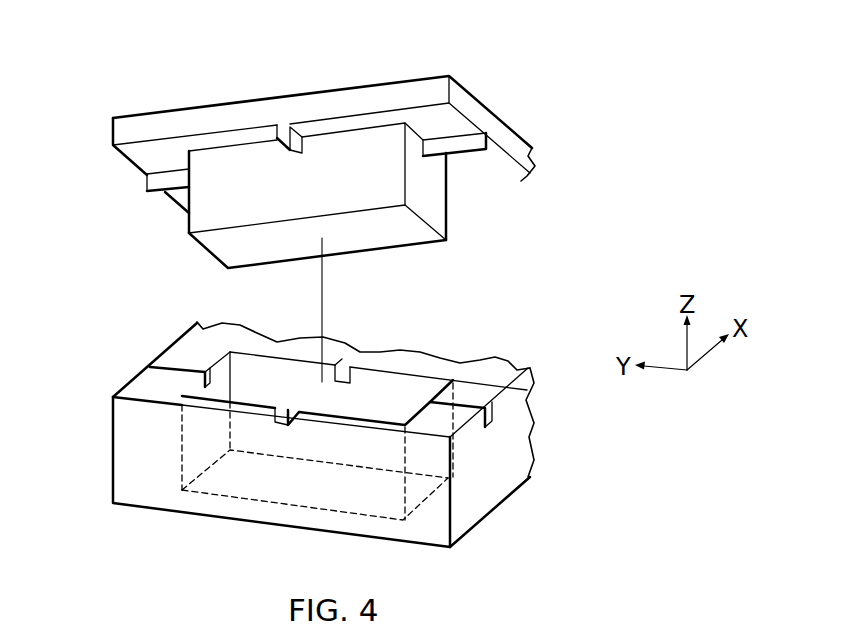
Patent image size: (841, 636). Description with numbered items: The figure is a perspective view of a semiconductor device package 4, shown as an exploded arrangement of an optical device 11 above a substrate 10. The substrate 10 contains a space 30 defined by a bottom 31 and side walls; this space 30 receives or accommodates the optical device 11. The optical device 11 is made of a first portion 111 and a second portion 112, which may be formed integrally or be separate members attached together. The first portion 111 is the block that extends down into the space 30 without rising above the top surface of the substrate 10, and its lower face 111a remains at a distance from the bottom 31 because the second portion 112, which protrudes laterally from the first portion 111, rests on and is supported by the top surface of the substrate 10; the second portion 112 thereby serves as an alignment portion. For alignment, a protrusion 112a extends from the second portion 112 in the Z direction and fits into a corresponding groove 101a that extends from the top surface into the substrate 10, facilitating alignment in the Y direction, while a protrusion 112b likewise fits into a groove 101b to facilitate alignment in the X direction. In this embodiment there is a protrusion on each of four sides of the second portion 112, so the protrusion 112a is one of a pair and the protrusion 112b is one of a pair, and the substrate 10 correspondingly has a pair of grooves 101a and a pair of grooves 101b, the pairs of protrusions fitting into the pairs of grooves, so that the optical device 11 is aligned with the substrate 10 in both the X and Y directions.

The semiconductor device package 4 is at (636, 134).
The substrate 10 is at (544, 352).
The optical device 11 is at (501, 74).
The space 30 is at (409, 398).
The bottom 31 is at (360, 487).
The groove 101a is at (338, 360).
The groove 101b is at (172, 372).
The first portion 111 is at (435, 204).
The bottom face of body portion 111a is at (397, 232).
The second portion 112 is at (473, 110).
The protrusion 112a is at (277, 137).
The protrusion 112b is at (447, 179).